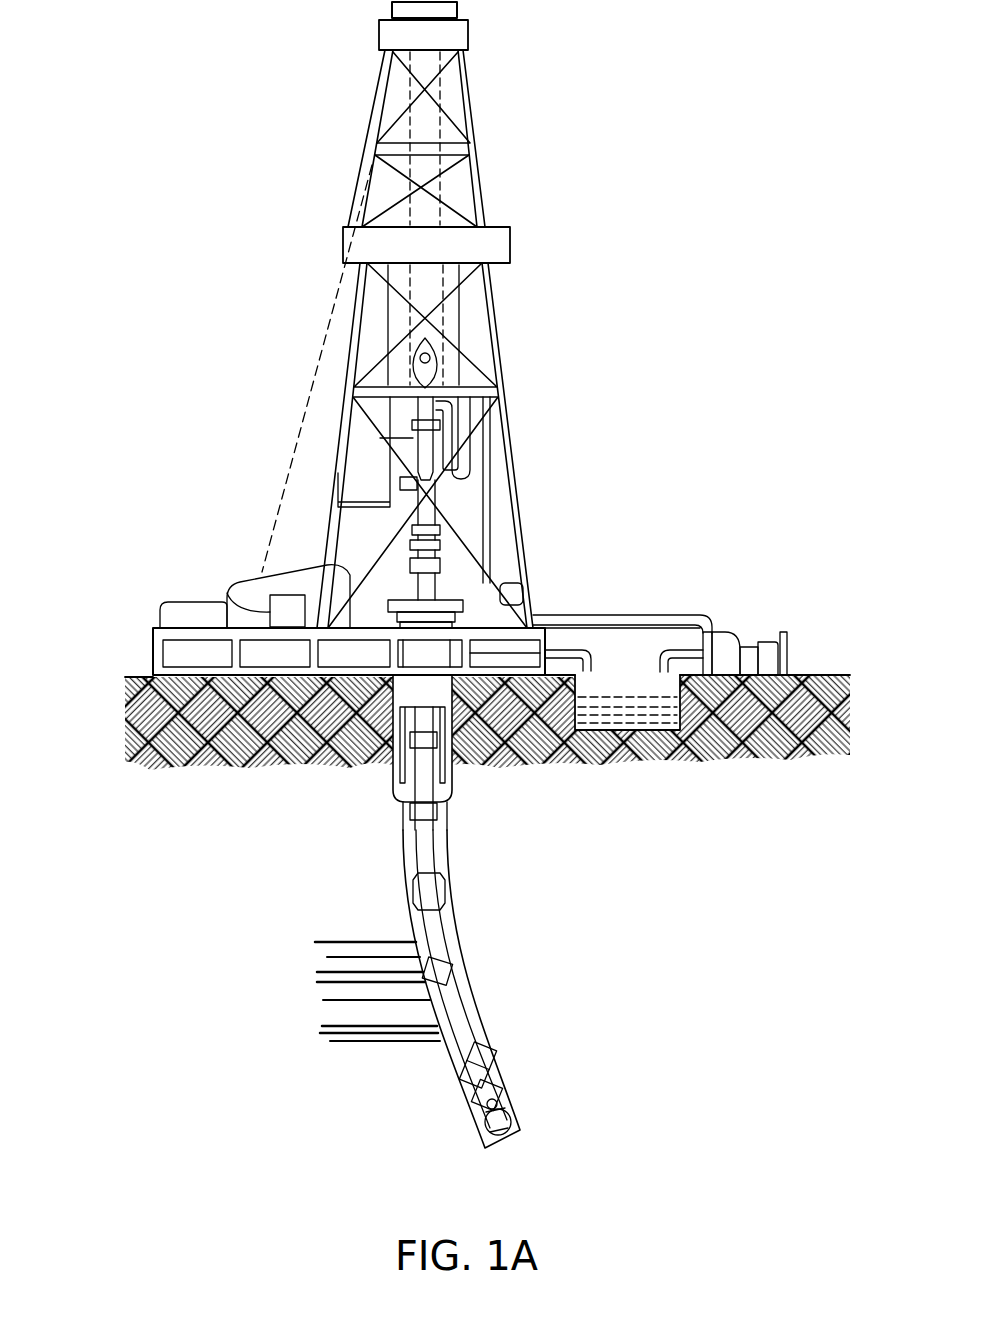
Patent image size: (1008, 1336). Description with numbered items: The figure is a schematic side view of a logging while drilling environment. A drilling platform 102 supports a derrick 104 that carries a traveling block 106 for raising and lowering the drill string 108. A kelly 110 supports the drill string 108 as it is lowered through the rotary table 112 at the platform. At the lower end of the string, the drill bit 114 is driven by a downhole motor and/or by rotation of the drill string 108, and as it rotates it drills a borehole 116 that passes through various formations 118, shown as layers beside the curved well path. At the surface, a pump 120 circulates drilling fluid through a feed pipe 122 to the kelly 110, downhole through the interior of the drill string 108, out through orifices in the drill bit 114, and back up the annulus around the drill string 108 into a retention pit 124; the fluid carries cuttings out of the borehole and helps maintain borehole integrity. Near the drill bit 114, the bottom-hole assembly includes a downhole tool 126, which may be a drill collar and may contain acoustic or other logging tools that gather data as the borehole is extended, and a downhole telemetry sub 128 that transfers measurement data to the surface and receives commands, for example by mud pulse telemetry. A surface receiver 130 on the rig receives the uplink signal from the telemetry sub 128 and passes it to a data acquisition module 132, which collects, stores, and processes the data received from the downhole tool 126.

The drilling platform 102 is at (152, 660).
The derrick 104 is at (482, 182).
The traveling block 106 is at (437, 363).
The drill string 108 is at (437, 855).
The kelly 110 is at (428, 455).
The rotary table 112 is at (450, 597).
The drill bit 114 is at (483, 1130).
The borehole 116 is at (450, 903).
The formations 118 is at (315, 912).
The pump 120 is at (727, 627).
The feed pipe 122 is at (615, 613).
The retention pit 124 is at (623, 687).
The downhole tool 126 is at (470, 1092).
The downhole telemetry sub 128 is at (460, 1063).
The surface receiver 130 is at (442, 545).
The data acquisition module 132 is at (228, 593).